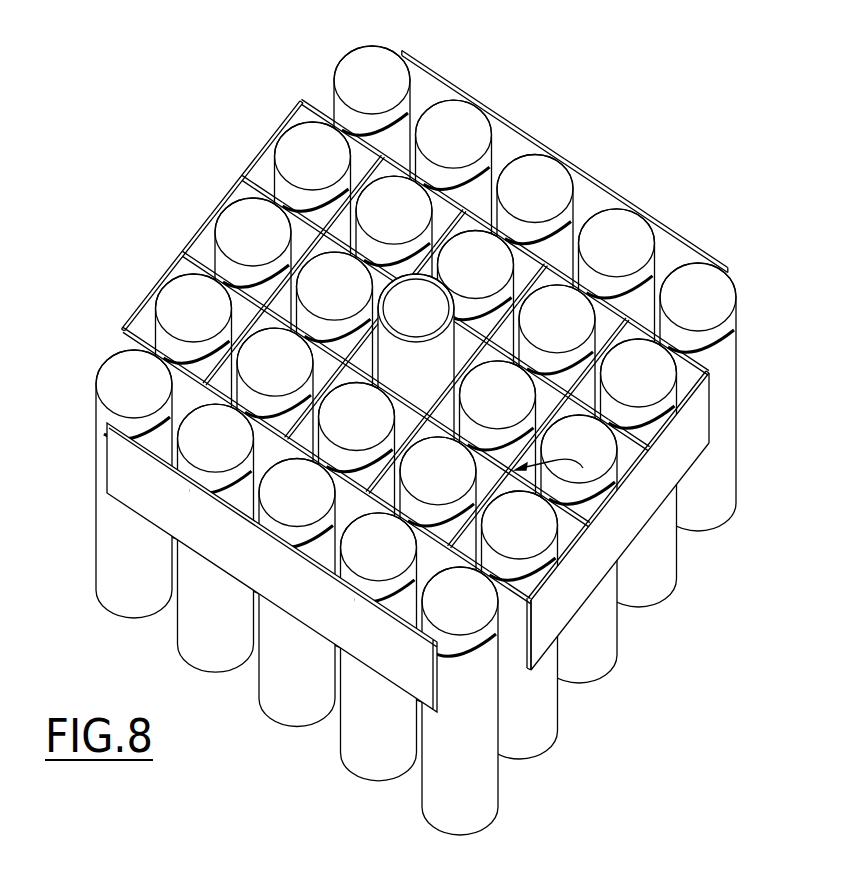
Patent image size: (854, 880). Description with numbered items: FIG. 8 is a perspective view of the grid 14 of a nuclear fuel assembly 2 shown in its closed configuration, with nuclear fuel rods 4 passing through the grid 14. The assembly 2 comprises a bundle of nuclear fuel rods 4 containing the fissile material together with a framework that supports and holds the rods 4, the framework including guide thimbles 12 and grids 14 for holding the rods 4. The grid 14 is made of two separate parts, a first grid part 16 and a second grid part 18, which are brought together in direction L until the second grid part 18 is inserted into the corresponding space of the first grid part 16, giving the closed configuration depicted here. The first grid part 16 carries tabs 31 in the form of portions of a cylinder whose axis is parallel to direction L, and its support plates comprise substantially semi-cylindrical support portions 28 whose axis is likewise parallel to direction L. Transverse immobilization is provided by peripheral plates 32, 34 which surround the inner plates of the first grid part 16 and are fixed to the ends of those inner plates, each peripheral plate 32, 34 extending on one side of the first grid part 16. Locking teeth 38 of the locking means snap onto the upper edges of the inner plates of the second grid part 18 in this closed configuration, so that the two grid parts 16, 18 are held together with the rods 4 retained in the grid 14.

The nuclear fuel assembly 2 is at (402, 437).
The nuclear fuel rods 4 is at (221, 648).
The guide thimbles 12 is at (429, 304).
The grid 14 is at (634, 536).
The first grid part 16 is at (690, 617).
The second grid part 18 is at (614, 607).
The support portions 28 is at (470, 653).
The tabs 31 is at (445, 414).
The peripheral plate 32 is at (437, 455).
The peripheral plate 34 is at (167, 507).
The locking teeth 38 is at (124, 338).